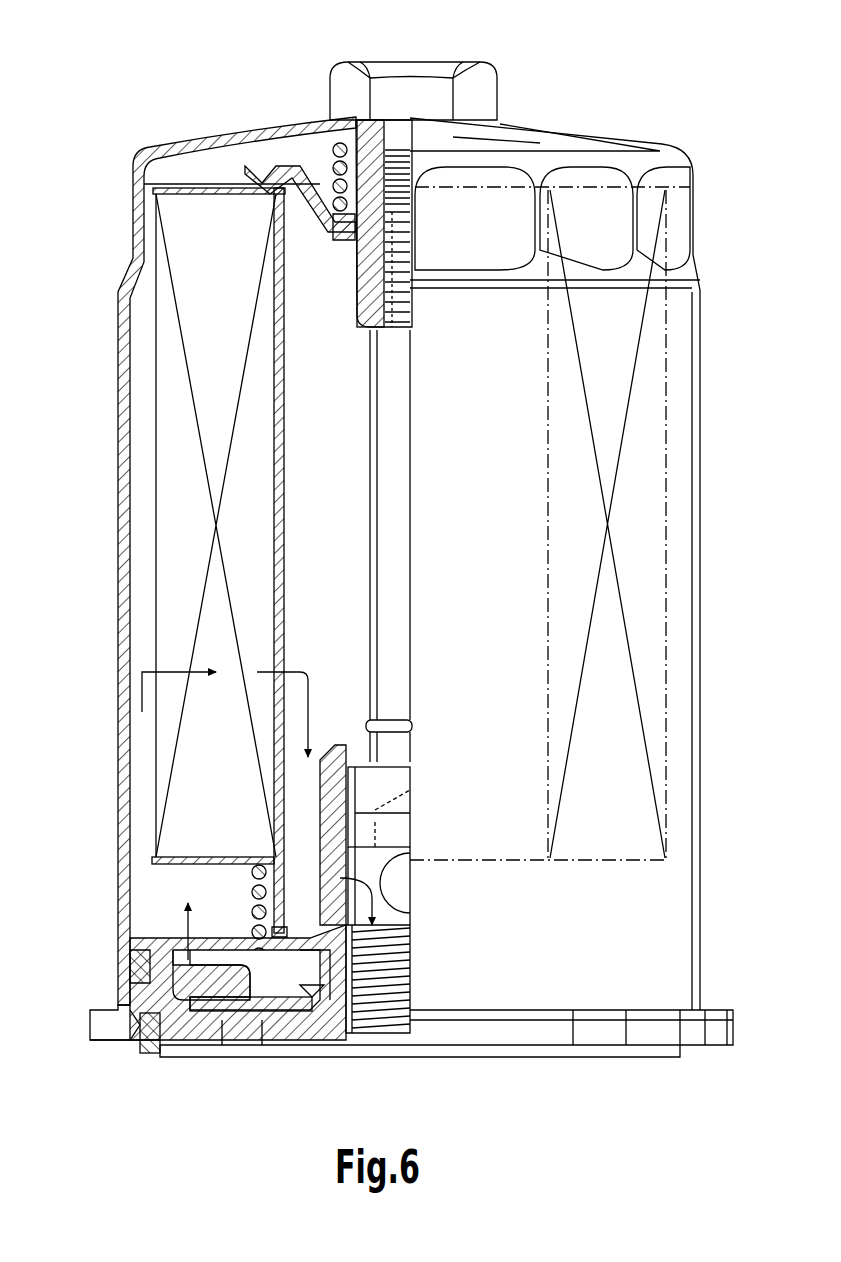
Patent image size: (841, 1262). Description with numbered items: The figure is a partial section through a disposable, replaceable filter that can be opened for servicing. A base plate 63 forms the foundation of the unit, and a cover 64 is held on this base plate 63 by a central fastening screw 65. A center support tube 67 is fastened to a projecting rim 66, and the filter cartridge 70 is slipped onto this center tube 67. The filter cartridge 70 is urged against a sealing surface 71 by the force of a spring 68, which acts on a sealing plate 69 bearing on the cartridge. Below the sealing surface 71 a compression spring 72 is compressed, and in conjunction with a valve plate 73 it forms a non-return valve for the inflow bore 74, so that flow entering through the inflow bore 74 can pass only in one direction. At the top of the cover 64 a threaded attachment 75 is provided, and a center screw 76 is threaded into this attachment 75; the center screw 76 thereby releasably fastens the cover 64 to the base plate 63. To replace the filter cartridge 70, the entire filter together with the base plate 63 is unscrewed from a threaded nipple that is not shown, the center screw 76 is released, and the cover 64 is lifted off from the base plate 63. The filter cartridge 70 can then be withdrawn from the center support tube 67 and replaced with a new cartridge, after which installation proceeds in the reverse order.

The base plate 63 is at (130, 1050).
The cover 64 is at (120, 712).
The central fastening screw 65 is at (390, 497).
The projecting rim 66 is at (320, 1027).
The center support tube 67 is at (276, 818).
The spring 68 is at (335, 150).
The sealing plate 69 is at (262, 166).
The filter cartridge 70 is at (153, 600).
The sealing surface 71 is at (246, 880).
The compression spring 72 is at (250, 932).
The valve plate 73 is at (243, 1077).
The inflow bore 74 is at (233, 1057).
The threaded attachment 75 is at (360, 130).
The center screw 76 is at (390, 580).